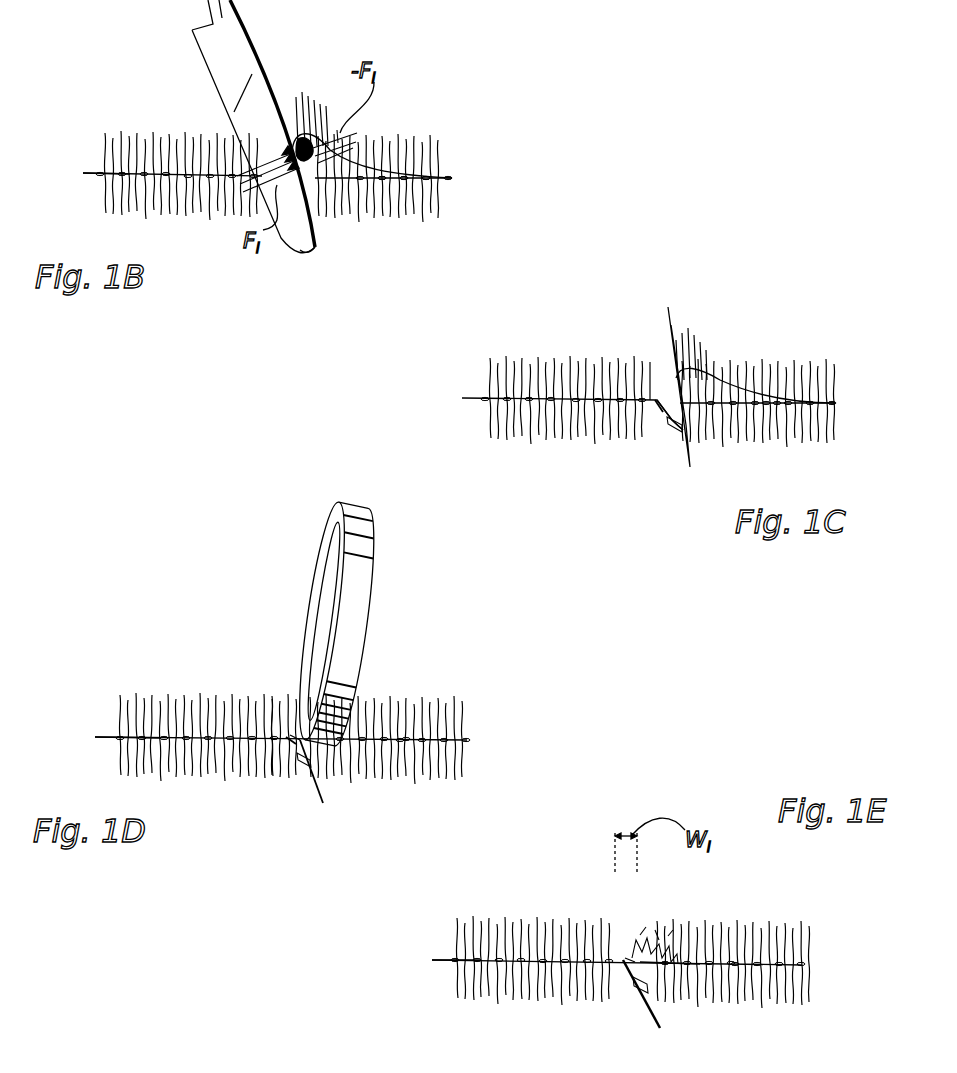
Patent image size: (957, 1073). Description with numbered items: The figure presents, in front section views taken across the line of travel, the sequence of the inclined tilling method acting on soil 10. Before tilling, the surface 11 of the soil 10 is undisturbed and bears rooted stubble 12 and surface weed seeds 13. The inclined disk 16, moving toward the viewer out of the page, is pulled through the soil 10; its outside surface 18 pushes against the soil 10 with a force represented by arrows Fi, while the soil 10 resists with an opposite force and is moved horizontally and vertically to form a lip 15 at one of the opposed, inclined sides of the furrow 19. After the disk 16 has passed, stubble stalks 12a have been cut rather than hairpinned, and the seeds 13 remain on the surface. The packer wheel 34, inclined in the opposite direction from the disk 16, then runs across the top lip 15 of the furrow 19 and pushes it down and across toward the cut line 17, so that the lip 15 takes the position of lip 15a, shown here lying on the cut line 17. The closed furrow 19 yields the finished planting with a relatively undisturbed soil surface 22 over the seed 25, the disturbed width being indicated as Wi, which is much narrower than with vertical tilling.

In FIG. 1B, the soil 10 is at (84, 210).
In FIG. 1C, the soil 10 is at (474, 442).
In FIG. 1D, the soil 10 is at (89, 777).
In FIG. 1E, the soil 10 is at (429, 1001).
In FIG. 1B, the surface 11 is at (90, 167).
In FIG. 1E, the surface 11 is at (433, 958).
In FIG. 1B, the rooted stubble 12 is at (187, 137).
In FIG. 1C, the rooted stubble 12 is at (537, 367).
In FIG. 1D, the rooted stubble 12 is at (188, 706).
In FIG. 1E, the rooted stubble 12 is at (497, 932).
In FIG. 1C, the stubble stalks 12a is at (665, 428).
In FIG. 1B, the surface weed seeds 13 is at (130, 157).
In FIG. 1C, the surface weed seeds 13 is at (710, 392).
In FIG. 1D, the surface weed seeds 13 is at (112, 737).
In FIG. 1E, the surface weed seeds 13 is at (650, 960).
In FIG. 1B, the lip 15 is at (291, 133).
In FIG. 1C, the lip 15 is at (668, 307).
In FIG. 1D, the lip position 15a is at (297, 733).
In FIG. 1E, the lip position 15a is at (630, 960).
In FIG. 1B, the inclined disk 16 is at (253, 126).
In FIG. 1C, the cut line 17 is at (655, 397).
In FIG. 1D, the cut line 17 is at (293, 737).
In FIG. 1B, the outside surface 18 is at (308, 241).
In FIG. 1C, the furrow 19 is at (651, 348).
In FIG. 1E, the soil surface 22 is at (638, 923).
In FIG. 1C, the seed 25 is at (683, 430).
In FIG. 1D, the seed 25 is at (320, 800).
In FIG. 1E, the seed 25 is at (660, 1025).
In FIG. 1D, the packer wheel 34 is at (335, 510).